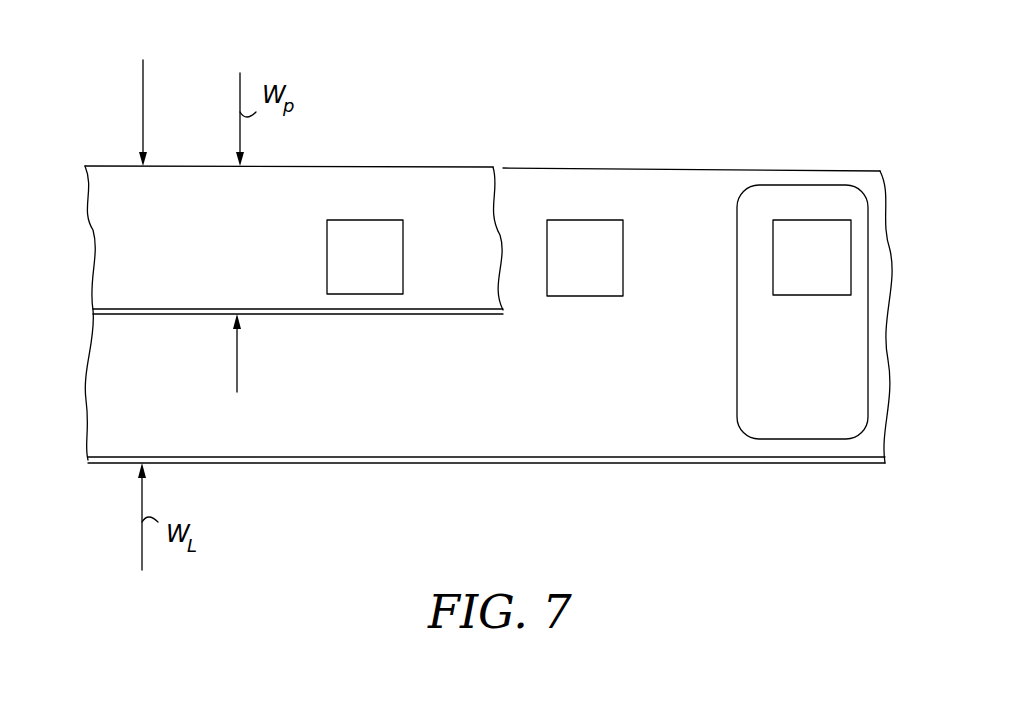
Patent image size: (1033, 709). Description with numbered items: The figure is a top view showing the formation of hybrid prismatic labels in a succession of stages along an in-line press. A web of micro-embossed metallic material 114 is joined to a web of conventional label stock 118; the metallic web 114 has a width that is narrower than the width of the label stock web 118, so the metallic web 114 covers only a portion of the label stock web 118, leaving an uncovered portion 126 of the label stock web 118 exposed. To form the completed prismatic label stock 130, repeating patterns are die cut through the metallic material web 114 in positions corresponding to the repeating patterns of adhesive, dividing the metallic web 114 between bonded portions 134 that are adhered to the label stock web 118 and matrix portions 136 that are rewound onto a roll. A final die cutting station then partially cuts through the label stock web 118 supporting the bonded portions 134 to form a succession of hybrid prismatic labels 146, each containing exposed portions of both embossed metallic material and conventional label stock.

The web of micro-embossed metallic material 114 is at (130, 246).
The web of label stock 118 is at (500, 427).
The uncovered portion 126 is at (378, 390).
The completed prismatic label stock 130 is at (569, 150).
The bonded portions 134 is at (327, 240).
The matrix portions 136 is at (385, 186).
The hybrid prismatic labels 146 is at (737, 360).